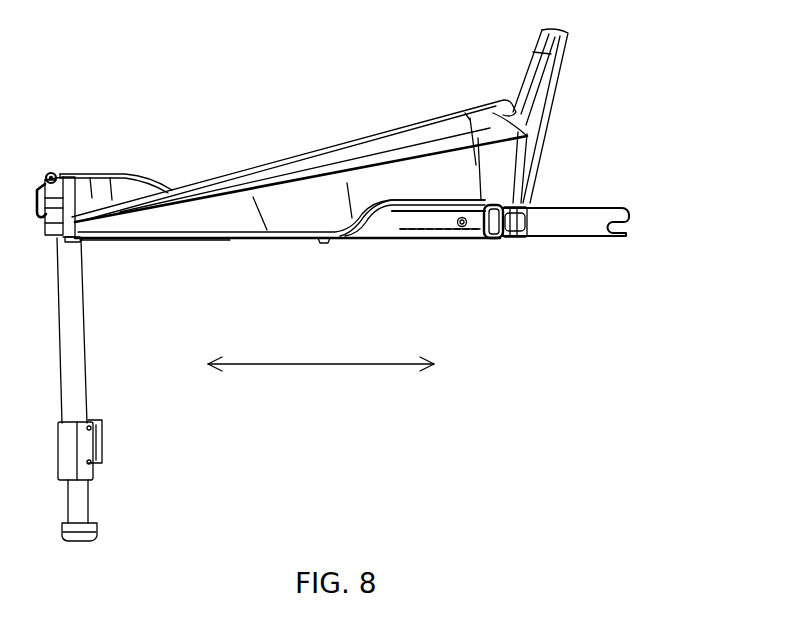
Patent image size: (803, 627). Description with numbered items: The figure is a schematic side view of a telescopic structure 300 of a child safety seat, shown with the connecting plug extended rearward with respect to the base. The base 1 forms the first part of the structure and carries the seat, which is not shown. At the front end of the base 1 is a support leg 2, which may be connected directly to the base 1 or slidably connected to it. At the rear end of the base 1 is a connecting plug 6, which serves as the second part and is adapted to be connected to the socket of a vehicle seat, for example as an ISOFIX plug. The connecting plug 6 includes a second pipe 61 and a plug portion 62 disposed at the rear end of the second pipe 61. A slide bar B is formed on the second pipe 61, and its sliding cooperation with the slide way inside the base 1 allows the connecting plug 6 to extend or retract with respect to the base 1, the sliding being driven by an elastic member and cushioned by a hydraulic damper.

The telescopic structure 300 is at (342, 34).
The base 1 is at (302, 178).
The support leg 2 is at (78, 340).
The connecting plug 6 is at (483, 252).
The second pipe 61 is at (411, 225).
The plug portion 62 is at (585, 225).
The slide bar B is at (385, 262).